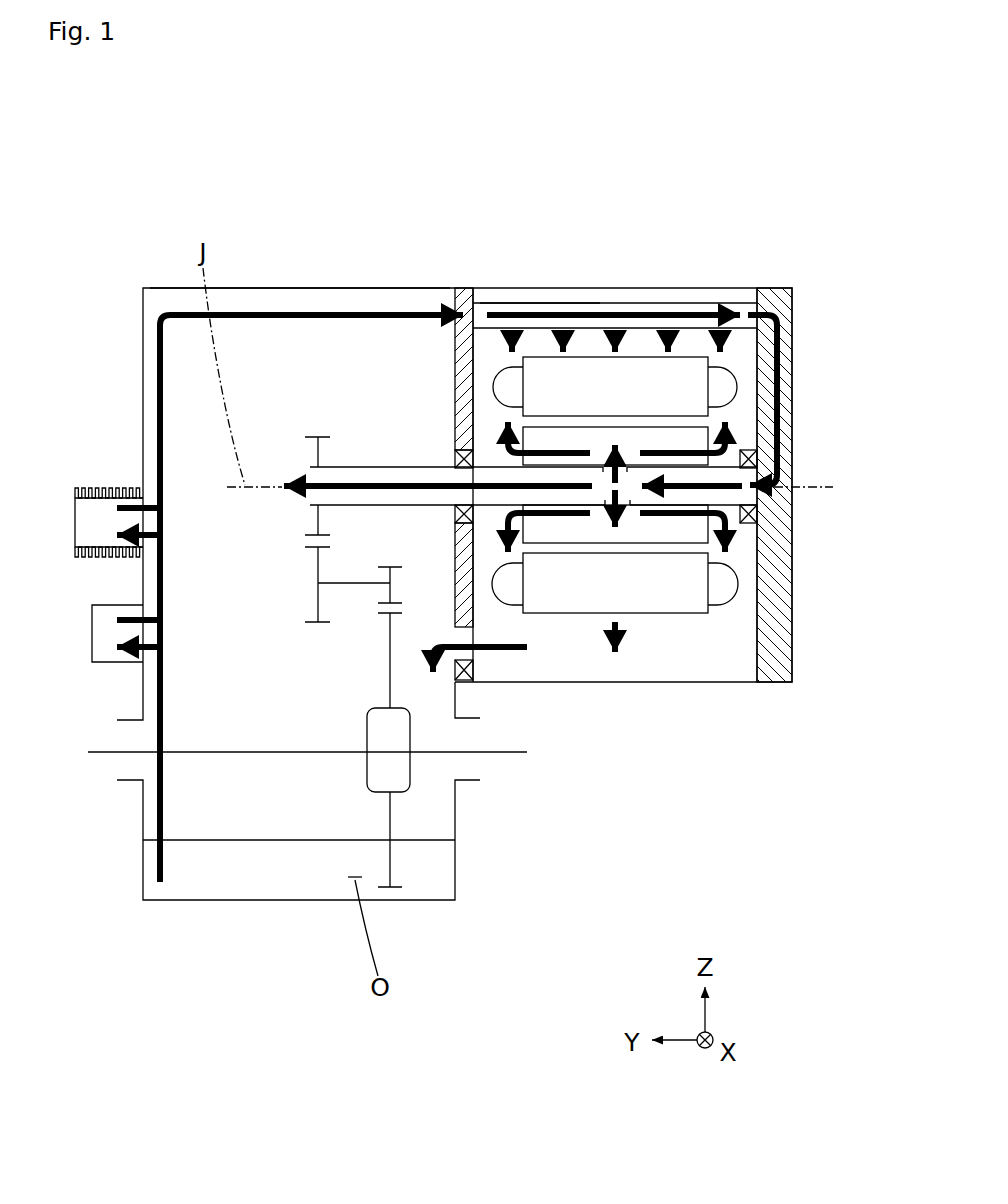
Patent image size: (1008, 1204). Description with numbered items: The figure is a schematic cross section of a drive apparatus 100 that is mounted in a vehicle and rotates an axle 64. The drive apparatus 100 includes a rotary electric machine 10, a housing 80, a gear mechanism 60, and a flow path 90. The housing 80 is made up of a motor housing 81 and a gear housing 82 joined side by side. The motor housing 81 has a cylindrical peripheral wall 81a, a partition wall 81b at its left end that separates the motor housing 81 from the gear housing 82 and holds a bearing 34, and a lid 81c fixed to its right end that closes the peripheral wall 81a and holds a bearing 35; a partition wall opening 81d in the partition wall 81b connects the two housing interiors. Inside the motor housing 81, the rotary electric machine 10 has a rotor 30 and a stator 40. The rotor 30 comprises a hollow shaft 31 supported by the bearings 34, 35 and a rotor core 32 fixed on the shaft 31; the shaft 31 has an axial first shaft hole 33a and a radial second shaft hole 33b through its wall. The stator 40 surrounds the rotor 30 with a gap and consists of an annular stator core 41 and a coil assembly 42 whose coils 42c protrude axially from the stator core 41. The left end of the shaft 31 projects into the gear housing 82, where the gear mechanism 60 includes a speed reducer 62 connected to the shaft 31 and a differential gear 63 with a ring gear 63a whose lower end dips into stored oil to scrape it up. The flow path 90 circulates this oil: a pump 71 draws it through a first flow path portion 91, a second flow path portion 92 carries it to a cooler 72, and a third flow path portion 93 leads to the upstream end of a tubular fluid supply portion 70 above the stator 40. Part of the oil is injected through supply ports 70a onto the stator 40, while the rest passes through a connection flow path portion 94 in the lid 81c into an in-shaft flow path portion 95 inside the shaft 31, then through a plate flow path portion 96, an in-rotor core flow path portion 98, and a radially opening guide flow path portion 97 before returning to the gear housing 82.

The drive apparatus 100 is at (654, 146).
The rotary electric machine 10 is at (738, 271).
The rotor 30 is at (608, 424).
The shaft 31 is at (400, 467).
The rotor core 32 is at (668, 534).
The first shaft hole 33a is at (555, 495).
The second shaft hole 33b is at (627, 497).
The bearing 34 is at (466, 450).
The bearing 35 is at (749, 458).
The stator 40 is at (716, 619).
The stator core 41 is at (658, 617).
The coil assembly 42 is at (739, 354).
The coil 42c is at (733, 382).
The gear mechanism 60 is at (169, 266).
The speed reducer 62 is at (304, 555).
The differential gear 63 is at (362, 778).
The ring gear 63a is at (390, 820).
The axle 64 is at (100, 753).
The fluid supply portion 70 is at (622, 297).
The supply port 70a is at (586, 333).
The pump 71 is at (102, 657).
The cooler 72 is at (93, 499).
The housing 80 is at (248, 286).
The motor housing 81 is at (676, 288).
The peripheral wall 81a is at (487, 303).
The partition wall 81b is at (455, 370).
The lid 81c is at (772, 565).
The partition wall opening 81d is at (468, 652).
The gear housing 82 is at (312, 288).
The flow path 90 is at (167, 874).
The first flow path portion 91 is at (158, 860).
The second flow path portion 92 is at (160, 583).
The third flow path portion 93 is at (160, 378).
The connection flow path portion 94 is at (779, 388).
The in-shaft flow path portion 95 is at (759, 493).
The plate flow path portion 96 is at (622, 462).
The guide flow path portion 97 is at (731, 442).
The in-rotor core flow path portion 98 is at (680, 455).